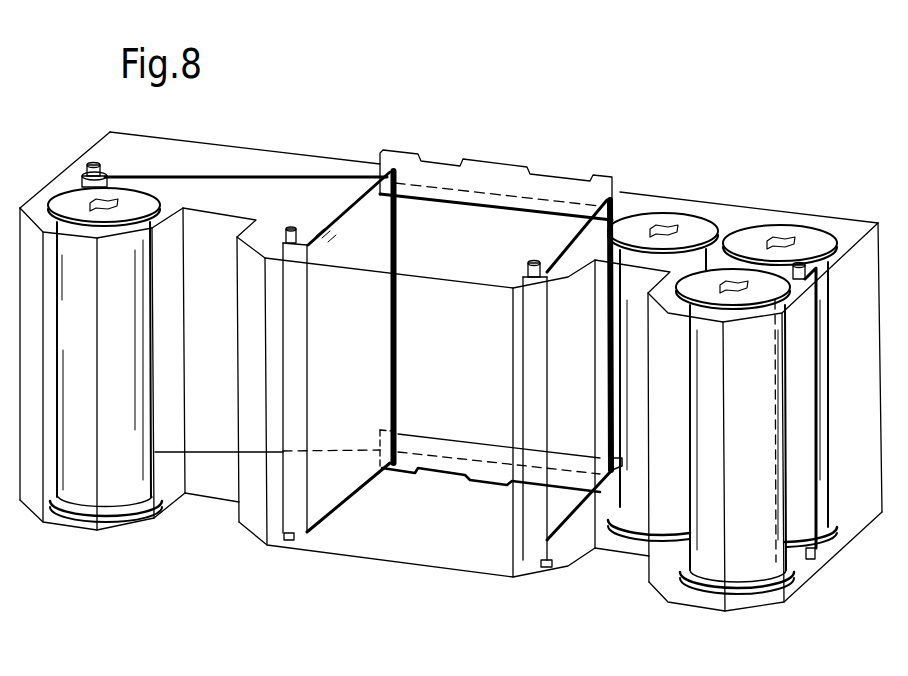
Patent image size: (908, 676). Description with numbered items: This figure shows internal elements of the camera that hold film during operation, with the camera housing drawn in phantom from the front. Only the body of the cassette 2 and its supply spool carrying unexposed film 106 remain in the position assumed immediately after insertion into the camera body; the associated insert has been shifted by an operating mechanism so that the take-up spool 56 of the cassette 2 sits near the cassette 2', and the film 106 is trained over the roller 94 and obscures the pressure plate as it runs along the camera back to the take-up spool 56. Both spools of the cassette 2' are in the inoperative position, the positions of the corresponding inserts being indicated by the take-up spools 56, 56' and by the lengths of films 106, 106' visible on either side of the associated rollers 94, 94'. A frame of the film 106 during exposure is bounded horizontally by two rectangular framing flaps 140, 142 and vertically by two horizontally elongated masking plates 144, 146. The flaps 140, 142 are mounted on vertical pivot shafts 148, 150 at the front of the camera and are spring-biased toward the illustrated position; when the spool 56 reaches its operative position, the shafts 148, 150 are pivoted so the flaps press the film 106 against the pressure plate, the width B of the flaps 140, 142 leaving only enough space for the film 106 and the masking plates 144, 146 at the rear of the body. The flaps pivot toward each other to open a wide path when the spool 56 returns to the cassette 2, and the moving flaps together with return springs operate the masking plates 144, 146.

The cassette 2 is at (98, 385).
The cassette 2' is at (712, 458).
The take-up spool 56 is at (671, 355).
The take-up spool 56' is at (792, 360).
The roller 94 is at (71, 154).
The roller 94' is at (835, 280).
The film 106 is at (246, 142).
The film 106' is at (839, 413).
The width of the flaps B is at (388, 361).
The framing flap 140 is at (340, 235).
The framing flap 142 is at (560, 250).
The masking plate 144 is at (497, 166).
The masking plate 146 is at (473, 493).
The pivot shaft 148 is at (288, 541).
The pivot shaft 150 is at (546, 568).